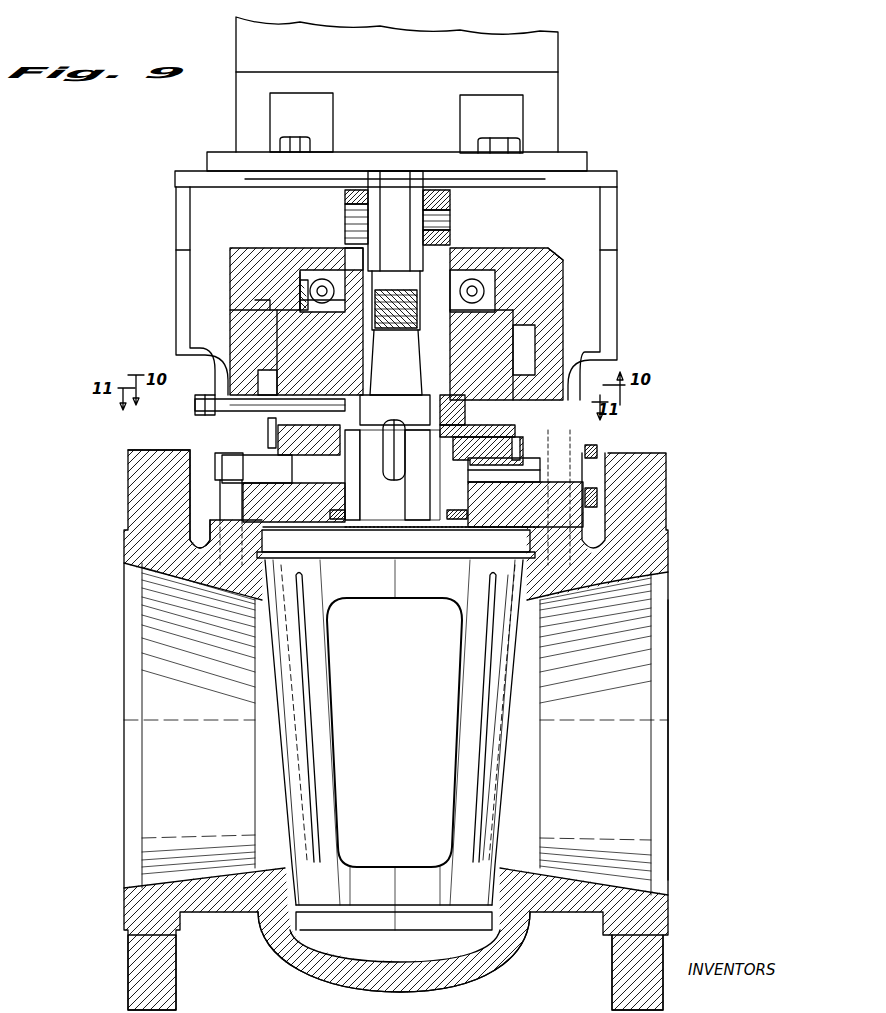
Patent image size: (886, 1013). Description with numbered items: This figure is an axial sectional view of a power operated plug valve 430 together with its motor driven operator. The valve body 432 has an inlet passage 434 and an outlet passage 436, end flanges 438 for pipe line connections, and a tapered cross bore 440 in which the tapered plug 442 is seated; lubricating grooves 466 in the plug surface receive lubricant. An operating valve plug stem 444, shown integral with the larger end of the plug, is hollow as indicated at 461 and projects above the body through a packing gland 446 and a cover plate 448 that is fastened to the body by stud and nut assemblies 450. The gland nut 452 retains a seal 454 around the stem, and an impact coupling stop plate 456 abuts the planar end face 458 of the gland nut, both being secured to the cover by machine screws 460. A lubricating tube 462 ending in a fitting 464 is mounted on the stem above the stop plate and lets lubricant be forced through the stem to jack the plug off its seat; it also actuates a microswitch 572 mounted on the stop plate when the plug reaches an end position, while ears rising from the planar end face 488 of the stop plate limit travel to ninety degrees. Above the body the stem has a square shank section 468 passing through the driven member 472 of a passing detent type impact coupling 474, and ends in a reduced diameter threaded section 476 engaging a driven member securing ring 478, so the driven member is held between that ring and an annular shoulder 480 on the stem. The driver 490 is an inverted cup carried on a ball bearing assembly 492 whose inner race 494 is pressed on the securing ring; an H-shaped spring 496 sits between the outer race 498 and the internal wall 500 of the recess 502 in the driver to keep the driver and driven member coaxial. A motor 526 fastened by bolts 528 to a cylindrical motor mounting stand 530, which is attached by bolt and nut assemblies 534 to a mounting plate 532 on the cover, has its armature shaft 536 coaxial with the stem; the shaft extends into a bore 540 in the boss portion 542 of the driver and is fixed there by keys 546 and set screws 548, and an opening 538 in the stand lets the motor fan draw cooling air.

The power operated plug valve 430 is at (104, 479).
The body 432 is at (485, 972).
The inlet passage 434 is at (124, 856).
The outlet passage 436 is at (668, 828).
The end flanges 438 is at (128, 970).
The tapered cross bore 440 is at (285, 580).
The tapered plug 442 is at (518, 738).
The operating valve plug stem 444 is at (410, 498).
The packing gland 446 is at (366, 475).
The cover plate 448 is at (580, 482).
The stud and nut assemblies 450 is at (230, 470).
The gland nut 452 is at (495, 452).
The seal 454 is at (345, 516).
The impact coupling stop plate 456 is at (548, 408).
The planar end face 458 is at (503, 445).
The machine screws 460 is at (468, 412).
The hollow of valve stem 461 is at (400, 475).
The lubricating tube 462 is at (255, 416).
The fitting 464 is at (195, 406).
The lubricating grooves 466 is at (322, 785).
The square shank section 468 is at (395, 283).
The driven member 472 is at (290, 342).
The passing detent type impact coupling 474 is at (532, 245).
The reduced diameter threaded section 476 is at (391, 328).
The driven member securing ring 478 is at (463, 280).
The annular shoulder 480 is at (440, 392).
The planar end face 488 is at (383, 430).
The driver 490 is at (566, 305).
The ball bearing assembly 492 is at (322, 278).
The inner race 494 is at (340, 275).
The H-shaped spring 496 is at (300, 282).
The outer race 498 is at (312, 318).
The internal wall 500 is at (262, 302).
The recess 502 is at (262, 386).
The motor 526 is at (558, 95).
The bolts 528 is at (312, 147).
The cylindrical motor mounting stand 530 is at (620, 268).
The mounting plate 532 is at (190, 478).
The bolt and nut assemblies 534 is at (215, 448).
The armature shaft 536 is at (404, 176).
The opening 538 is at (252, 184).
The bore 540 is at (368, 216).
The boss portion 542 is at (450, 222).
The keys 546 is at (345, 196).
The set screws 548 is at (450, 240).
The microswitch 572 is at (268, 435).